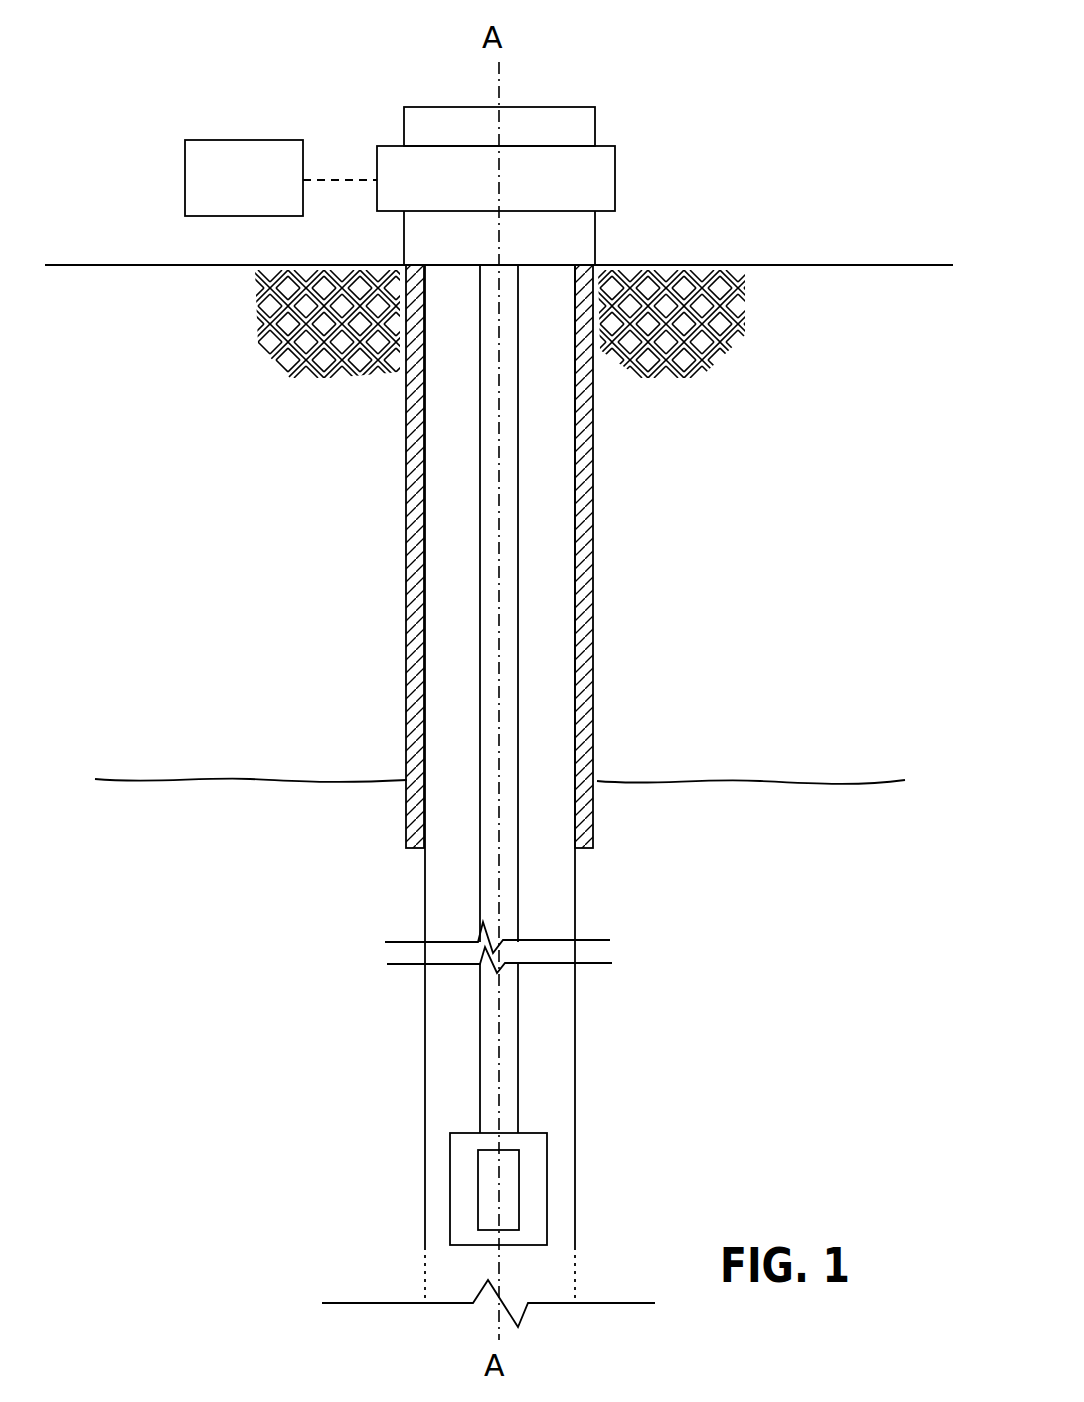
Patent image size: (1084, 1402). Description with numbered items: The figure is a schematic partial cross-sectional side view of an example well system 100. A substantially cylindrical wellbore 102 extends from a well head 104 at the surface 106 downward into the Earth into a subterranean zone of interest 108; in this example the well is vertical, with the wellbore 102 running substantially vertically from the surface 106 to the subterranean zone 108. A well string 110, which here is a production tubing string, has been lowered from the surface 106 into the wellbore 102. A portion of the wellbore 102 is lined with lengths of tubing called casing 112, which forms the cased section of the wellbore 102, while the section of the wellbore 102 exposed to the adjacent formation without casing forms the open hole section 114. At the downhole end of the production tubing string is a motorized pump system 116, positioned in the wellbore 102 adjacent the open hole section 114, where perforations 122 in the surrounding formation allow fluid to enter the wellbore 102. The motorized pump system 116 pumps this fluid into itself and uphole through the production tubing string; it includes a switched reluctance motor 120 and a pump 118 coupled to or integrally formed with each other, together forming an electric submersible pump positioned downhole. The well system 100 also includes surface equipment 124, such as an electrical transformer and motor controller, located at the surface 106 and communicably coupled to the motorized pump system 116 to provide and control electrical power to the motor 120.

The well system 100 is at (745, 138).
The wellbore 102 is at (440, 1068).
The well head 104 is at (537, 105).
The surface 106 is at (816, 265).
The subterranean zone of interest 108 is at (884, 861).
The well string 110 is at (519, 887).
The casing 112 is at (597, 612).
The open hole section 114 is at (580, 1008).
The motorized pump system 116 is at (447, 1201).
The pump 118 is at (590, 1183).
The switched reluctance motor 120 is at (516, 1212).
The perforations 122 is at (415, 1279).
The surface equipment 124 is at (281, 178).